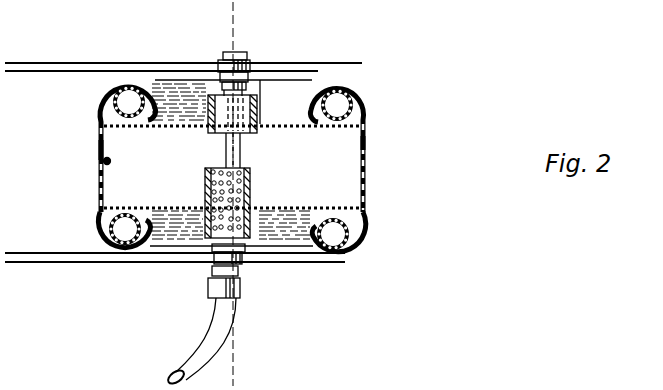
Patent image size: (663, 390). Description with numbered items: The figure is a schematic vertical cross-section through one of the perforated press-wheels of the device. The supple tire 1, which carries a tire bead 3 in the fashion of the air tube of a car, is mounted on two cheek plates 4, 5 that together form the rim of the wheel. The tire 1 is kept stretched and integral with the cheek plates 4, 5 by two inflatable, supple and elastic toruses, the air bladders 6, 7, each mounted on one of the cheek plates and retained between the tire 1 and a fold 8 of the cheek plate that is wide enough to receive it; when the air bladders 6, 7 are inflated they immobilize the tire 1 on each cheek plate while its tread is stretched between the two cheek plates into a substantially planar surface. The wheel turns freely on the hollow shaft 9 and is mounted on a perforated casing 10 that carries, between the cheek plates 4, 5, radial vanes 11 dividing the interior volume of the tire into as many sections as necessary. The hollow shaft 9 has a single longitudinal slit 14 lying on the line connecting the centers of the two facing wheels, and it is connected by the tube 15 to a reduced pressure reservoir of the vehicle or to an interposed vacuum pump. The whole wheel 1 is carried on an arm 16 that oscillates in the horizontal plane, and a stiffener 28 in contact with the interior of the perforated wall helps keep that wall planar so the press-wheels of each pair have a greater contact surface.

The supple tire 1 is at (367, 186).
The tire bead 3 is at (143, 92).
The cheek plate 4 is at (288, 103).
The cheek plate 5 is at (283, 228).
The air bladder 6 is at (360, 93).
The air bladder 7 is at (126, 232).
The fold 8 is at (332, 233).
The hollow shaft 9 is at (238, 55).
The perforated casing 10 is at (225, 112).
The radial vanes 11 is at (122, 150).
The slit 14 is at (238, 148).
The tube 15 is at (222, 346).
The arm 16 is at (42, 70).
The stiffener 28 is at (100, 160).